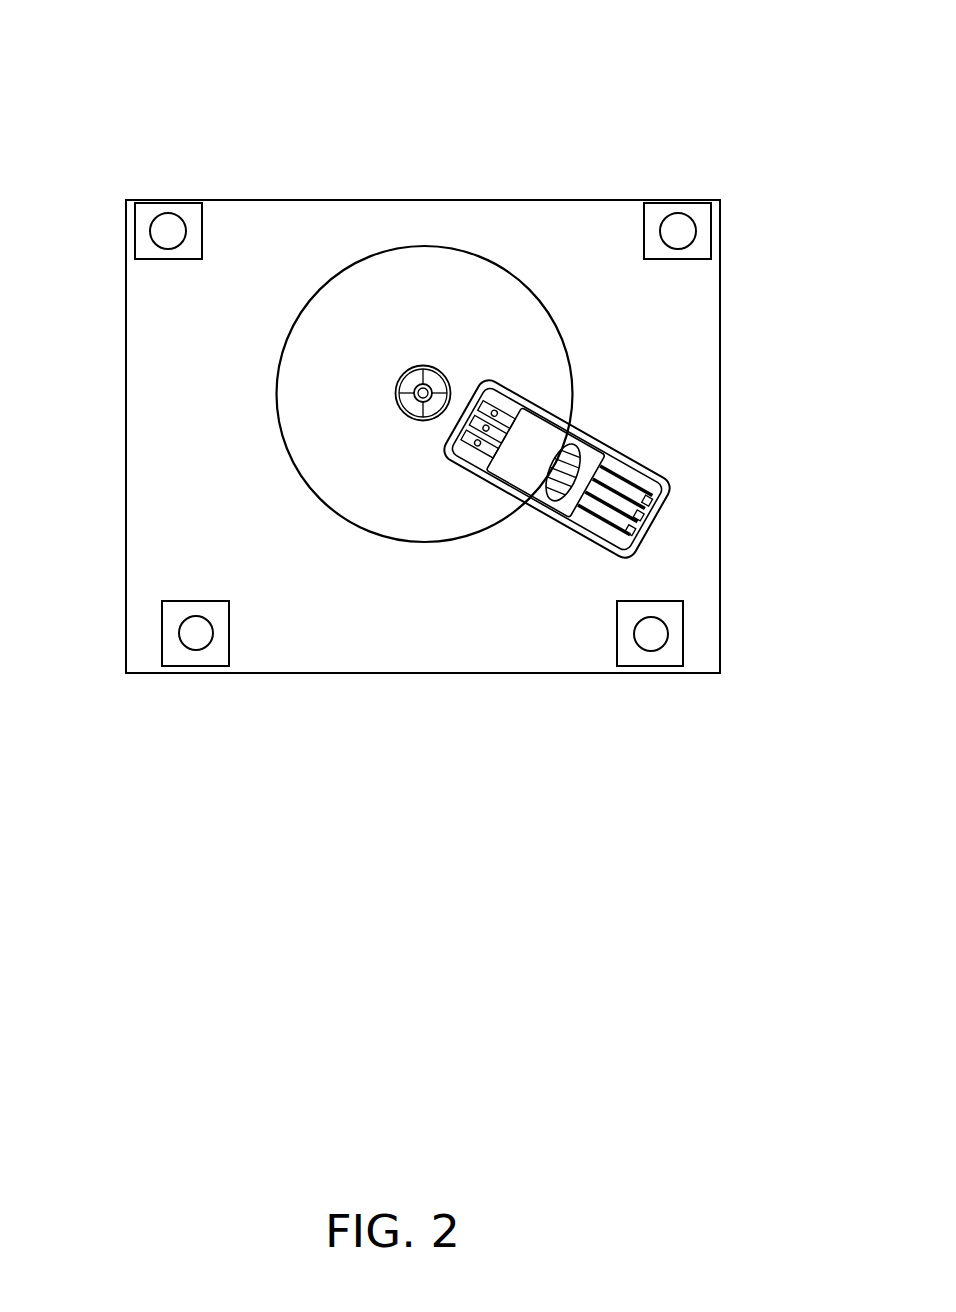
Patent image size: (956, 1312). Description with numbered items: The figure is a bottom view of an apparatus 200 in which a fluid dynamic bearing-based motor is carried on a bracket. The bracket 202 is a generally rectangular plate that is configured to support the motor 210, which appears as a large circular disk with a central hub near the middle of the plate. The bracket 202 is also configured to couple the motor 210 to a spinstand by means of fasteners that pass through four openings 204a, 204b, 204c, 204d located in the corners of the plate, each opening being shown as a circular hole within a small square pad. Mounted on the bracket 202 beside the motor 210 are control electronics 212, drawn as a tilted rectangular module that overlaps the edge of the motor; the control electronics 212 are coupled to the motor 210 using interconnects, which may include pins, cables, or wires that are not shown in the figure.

The apparatus 200 is at (70, 50).
The bracket 202 is at (273, 215).
The opening 204a is at (173, 227).
The opening 204b is at (682, 220).
The opening 204c is at (196, 641).
The opening 204d is at (657, 637).
The motor 210 is at (446, 303).
The control electronics 212 is at (541, 432).